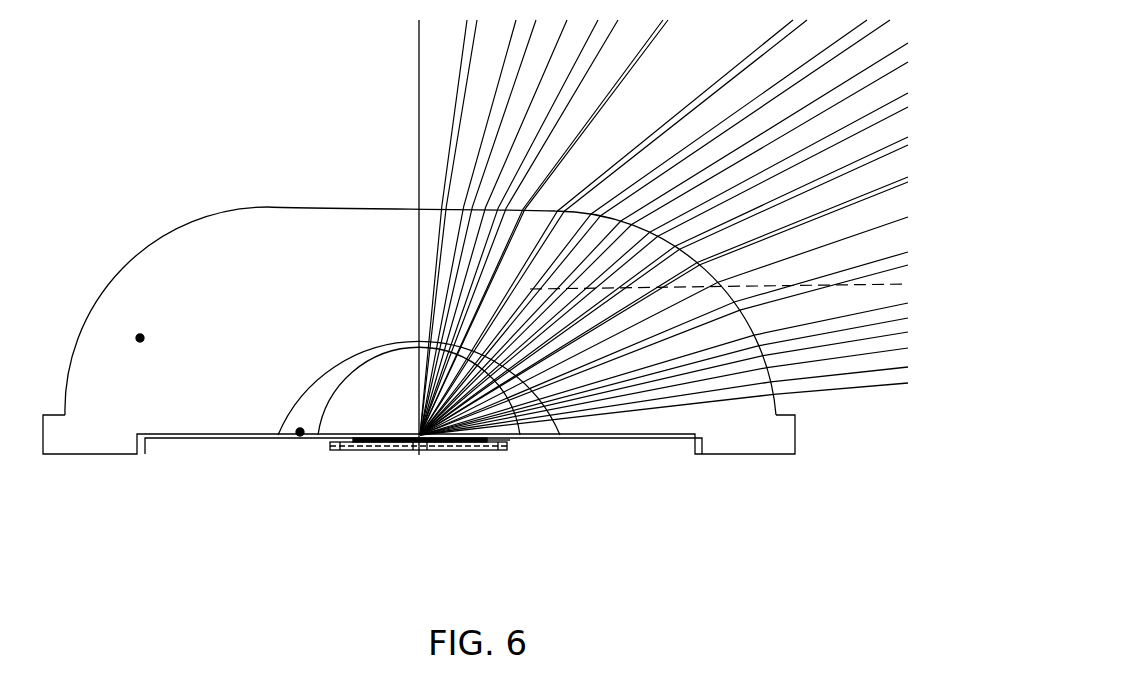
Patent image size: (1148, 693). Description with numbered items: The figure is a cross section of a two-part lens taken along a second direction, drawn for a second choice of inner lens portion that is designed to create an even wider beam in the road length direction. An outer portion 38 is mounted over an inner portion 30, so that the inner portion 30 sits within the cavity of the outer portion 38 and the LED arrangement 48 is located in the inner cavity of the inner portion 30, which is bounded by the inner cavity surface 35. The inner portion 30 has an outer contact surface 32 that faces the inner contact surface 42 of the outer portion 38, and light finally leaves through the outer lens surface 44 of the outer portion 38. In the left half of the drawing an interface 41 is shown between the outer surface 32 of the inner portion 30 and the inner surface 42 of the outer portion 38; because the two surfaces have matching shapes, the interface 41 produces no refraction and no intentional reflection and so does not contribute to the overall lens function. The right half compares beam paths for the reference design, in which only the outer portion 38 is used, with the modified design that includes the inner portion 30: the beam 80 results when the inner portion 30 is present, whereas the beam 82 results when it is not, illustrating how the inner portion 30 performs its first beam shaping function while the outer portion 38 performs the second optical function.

The inner portion 30 is at (300, 432).
The outer contact surface 32 is at (304, 392).
The inner cavity surface 35 is at (330, 408).
The outer portion 38 is at (140, 338).
The interface 41 is at (312, 383).
The inner contact surface 42 is at (343, 363).
The outer lens surface 44 is at (182, 240).
The LED arrangement 48 is at (420, 475).
The beam 80 is at (883, 391).
The beam 82 is at (887, 366).